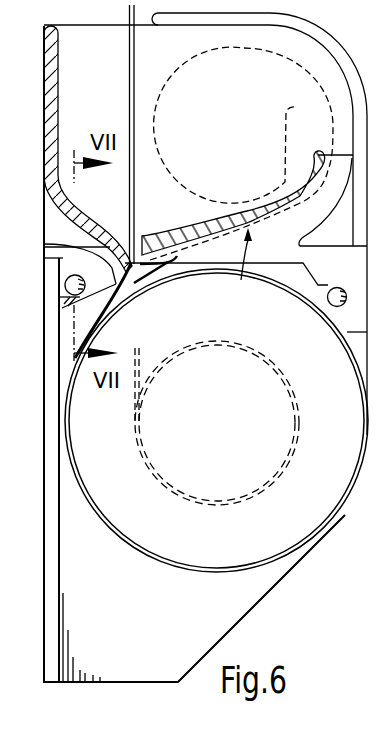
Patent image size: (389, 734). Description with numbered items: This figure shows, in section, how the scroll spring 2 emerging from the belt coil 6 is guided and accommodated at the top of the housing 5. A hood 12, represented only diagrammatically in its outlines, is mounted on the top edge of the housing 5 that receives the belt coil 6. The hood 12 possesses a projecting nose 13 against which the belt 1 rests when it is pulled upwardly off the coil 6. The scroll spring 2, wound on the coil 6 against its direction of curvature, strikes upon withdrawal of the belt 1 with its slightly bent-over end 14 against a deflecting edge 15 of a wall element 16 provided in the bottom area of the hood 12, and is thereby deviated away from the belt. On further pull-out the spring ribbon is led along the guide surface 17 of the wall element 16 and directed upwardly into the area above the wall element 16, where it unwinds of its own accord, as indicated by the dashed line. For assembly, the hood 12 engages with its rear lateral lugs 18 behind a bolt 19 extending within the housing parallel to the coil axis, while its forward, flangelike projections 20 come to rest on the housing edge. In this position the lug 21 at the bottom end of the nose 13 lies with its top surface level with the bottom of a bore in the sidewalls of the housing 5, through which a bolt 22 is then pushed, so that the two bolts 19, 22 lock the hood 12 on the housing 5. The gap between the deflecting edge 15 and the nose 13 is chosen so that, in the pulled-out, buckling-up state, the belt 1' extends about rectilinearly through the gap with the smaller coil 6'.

The belt 1 is at (104, 181).
The belt in pulled-out position 1' is at (126, 388).
The scroll spring 2 is at (332, 125).
The housing 5 is at (56, 530).
The belt coil 6 is at (216, 443).
The smaller coil 6' is at (230, 423).
The hood 12 is at (339, 62).
The projecting nose 13 is at (58, 248).
The bent-over end 14 is at (175, 258).
The deflecting edge 15 is at (152, 284).
The wall element 16 is at (184, 232).
The guide surface 17 is at (241, 267).
The rear lateral lugs 18 is at (358, 318).
The bolt 19 is at (328, 300).
The flangelike projections 20 is at (63, 257).
The lug 21 is at (67, 306).
The bolt 22 is at (65, 288).